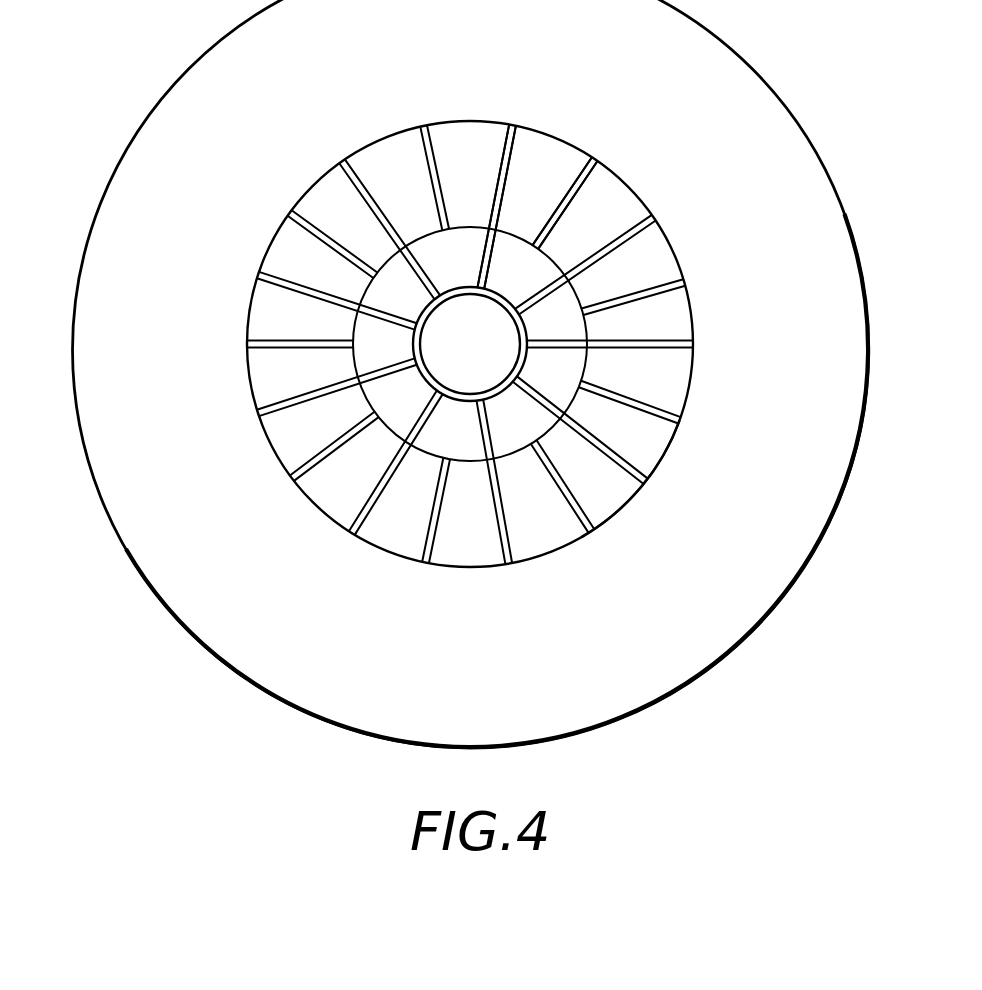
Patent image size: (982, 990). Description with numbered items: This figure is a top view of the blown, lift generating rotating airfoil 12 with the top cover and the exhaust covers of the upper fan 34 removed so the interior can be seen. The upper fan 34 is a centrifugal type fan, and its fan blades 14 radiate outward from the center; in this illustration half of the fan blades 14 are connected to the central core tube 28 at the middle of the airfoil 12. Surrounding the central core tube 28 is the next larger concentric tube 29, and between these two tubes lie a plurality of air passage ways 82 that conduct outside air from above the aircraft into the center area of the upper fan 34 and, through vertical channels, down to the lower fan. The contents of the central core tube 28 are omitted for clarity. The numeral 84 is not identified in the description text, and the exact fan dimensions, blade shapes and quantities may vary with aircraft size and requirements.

The airfoil 12 is at (127, 146).
The fan blades 14 is at (280, 350).
The central core tube 28 is at (524, 372).
The next larger concentric tube 29 is at (456, 466).
The upper fan 34 is at (244, 305).
The air passage ways 82 is at (557, 310).
The outer rib ends 84 is at (655, 457).